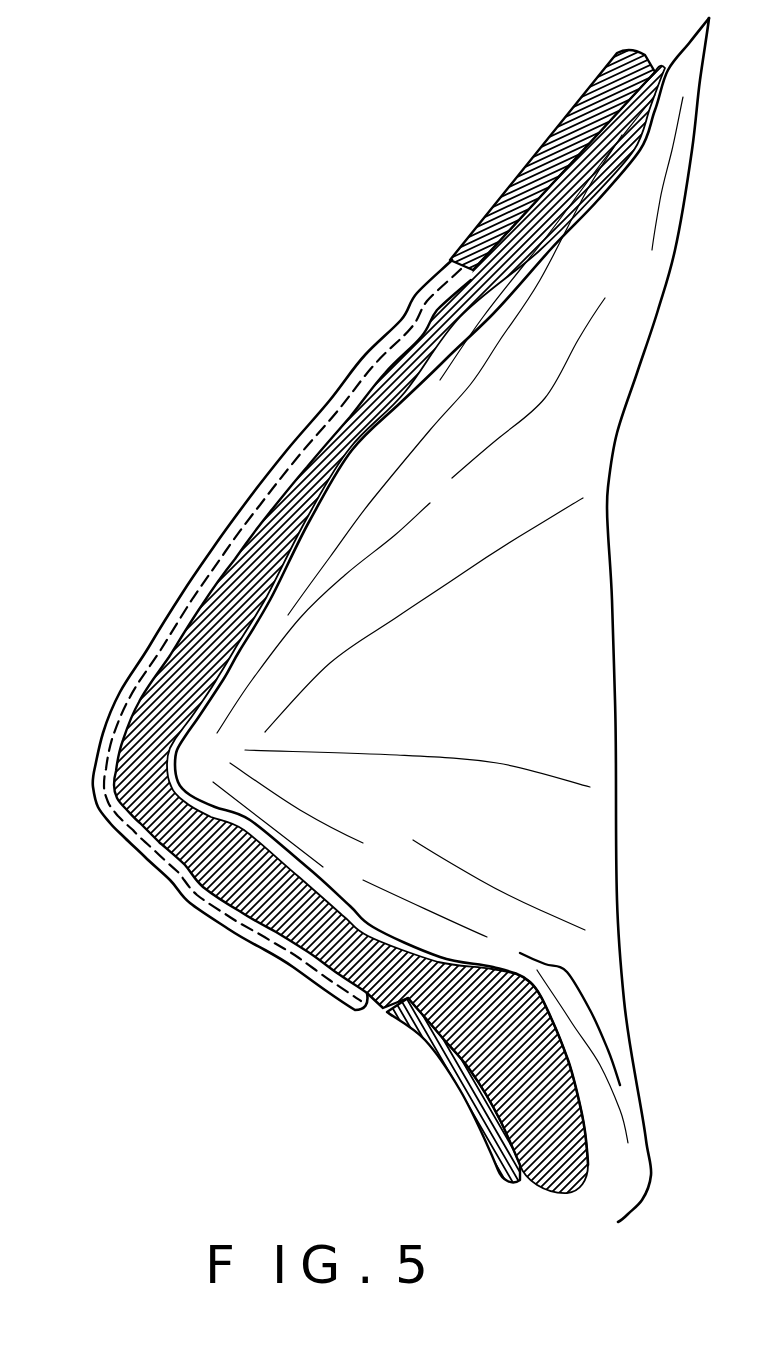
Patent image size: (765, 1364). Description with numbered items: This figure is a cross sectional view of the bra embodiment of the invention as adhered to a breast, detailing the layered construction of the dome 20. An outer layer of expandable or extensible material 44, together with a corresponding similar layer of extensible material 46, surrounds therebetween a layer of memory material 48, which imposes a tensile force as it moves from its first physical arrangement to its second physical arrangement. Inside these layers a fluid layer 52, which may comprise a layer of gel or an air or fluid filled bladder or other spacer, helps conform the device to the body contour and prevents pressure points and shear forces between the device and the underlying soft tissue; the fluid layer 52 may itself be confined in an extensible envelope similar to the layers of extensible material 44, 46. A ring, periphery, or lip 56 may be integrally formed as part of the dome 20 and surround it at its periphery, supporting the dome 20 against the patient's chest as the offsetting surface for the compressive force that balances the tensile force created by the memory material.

The dome 20 is at (382, 682).
The outer layer of expandable or extensible material 44 is at (193, 905).
The layer of extensible material 46 is at (283, 960).
The layer of memory material 48 is at (260, 950).
The fluid layer 52 is at (350, 947).
The ring or periphery 56 is at (540, 153).